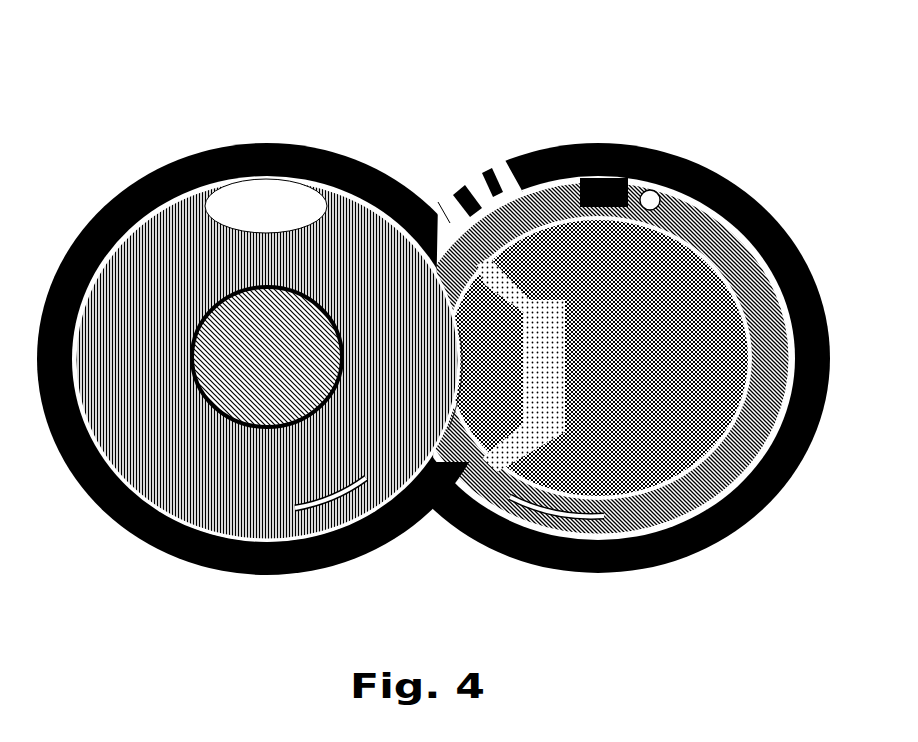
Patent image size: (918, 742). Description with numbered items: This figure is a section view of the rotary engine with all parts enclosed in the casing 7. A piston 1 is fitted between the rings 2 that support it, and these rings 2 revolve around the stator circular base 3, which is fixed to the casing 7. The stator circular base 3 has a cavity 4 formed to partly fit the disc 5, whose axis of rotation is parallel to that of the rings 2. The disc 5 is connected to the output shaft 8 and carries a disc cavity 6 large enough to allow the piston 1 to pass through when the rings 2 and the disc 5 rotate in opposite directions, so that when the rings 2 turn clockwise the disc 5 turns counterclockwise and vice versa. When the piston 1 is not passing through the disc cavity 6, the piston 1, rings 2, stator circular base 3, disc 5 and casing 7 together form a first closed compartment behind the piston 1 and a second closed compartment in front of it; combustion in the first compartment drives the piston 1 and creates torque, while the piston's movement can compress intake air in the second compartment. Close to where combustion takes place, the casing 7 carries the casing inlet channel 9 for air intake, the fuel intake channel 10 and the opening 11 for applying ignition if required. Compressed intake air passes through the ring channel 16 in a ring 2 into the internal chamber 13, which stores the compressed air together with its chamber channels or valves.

The piston 1 is at (597, 180).
The rings supporting piston 2 is at (690, 213).
The stator circular base 3 is at (683, 288).
The cavity in stator circular base 4 is at (465, 372).
The disc 5 is at (348, 216).
The disc cavity 6 is at (270, 196).
The casing 7 is at (177, 170).
The output shaft 8 is at (233, 303).
The casing inlet channel/valve for air intake 9 is at (448, 203).
The combustible fuel intake channel/valve in casing 10 is at (470, 187).
The opening to apply ignition 11 is at (498, 167).
The internal chamber for storage of compressed air 13 is at (518, 287).
The ring channel/valve in ring 16 is at (653, 193).